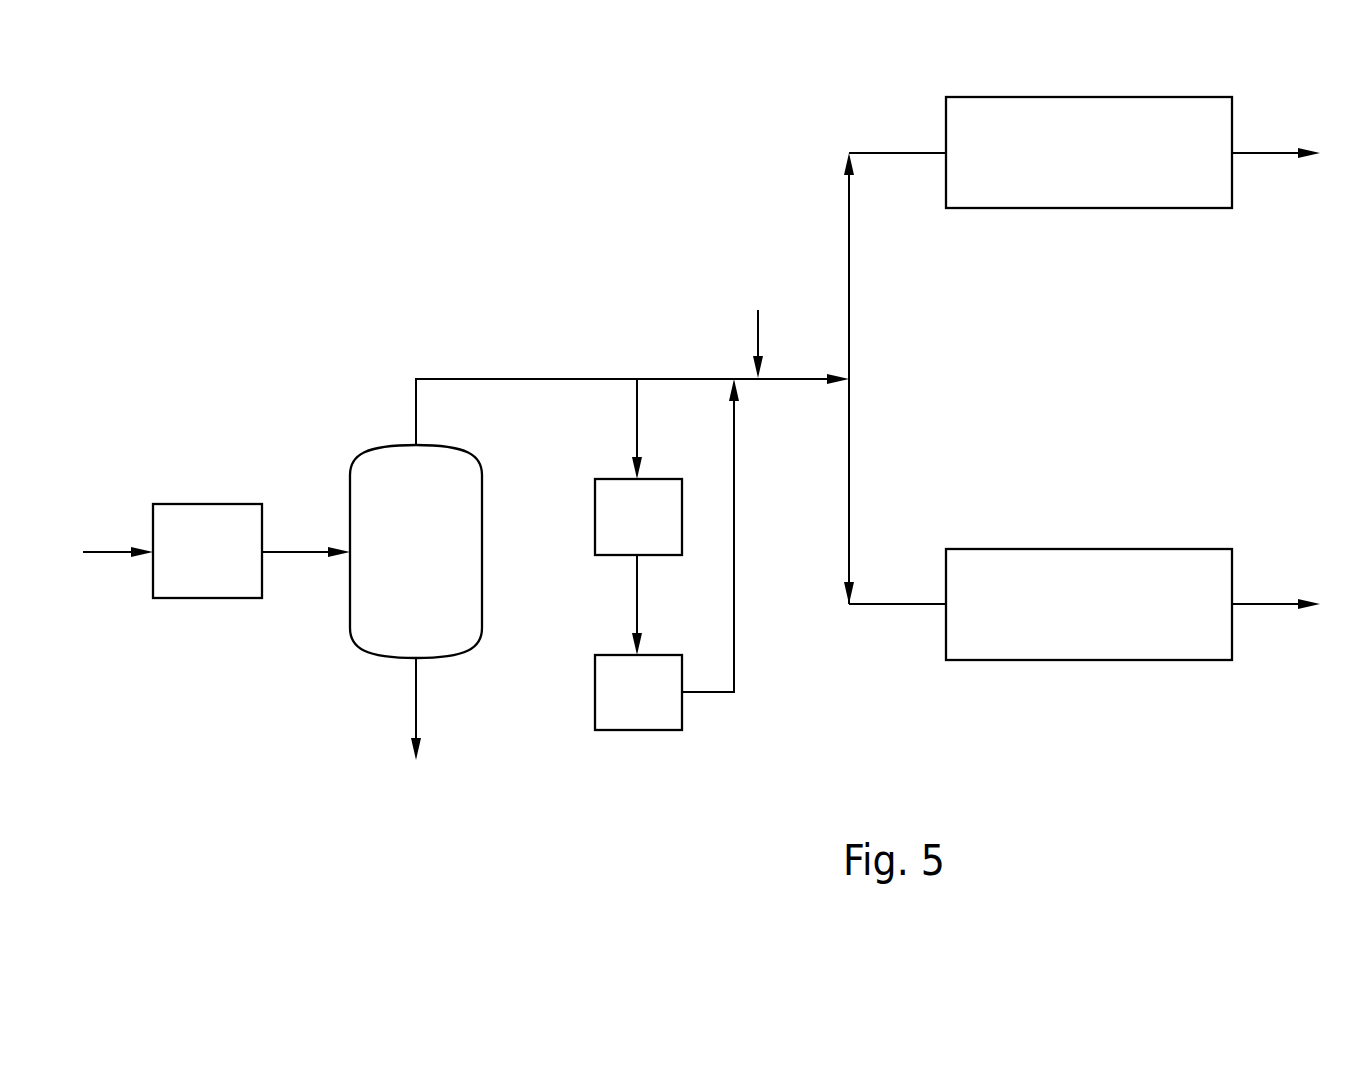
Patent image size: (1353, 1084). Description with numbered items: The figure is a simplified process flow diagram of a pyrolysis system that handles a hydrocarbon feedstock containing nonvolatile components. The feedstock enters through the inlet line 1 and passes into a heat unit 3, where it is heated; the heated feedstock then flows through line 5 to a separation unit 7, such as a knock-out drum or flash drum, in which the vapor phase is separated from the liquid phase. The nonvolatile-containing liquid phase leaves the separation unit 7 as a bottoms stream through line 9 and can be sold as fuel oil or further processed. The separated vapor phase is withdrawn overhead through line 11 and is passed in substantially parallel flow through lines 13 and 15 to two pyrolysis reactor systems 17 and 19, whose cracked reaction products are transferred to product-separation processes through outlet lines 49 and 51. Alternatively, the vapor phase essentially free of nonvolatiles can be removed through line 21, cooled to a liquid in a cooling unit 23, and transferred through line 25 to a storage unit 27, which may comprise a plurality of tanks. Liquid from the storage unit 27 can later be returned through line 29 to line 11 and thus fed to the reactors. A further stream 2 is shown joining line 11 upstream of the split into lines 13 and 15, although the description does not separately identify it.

The inlet line 1 is at (117, 548).
The heat unit 3 is at (220, 598).
The line 5 is at (312, 548).
The separation unit 7 is at (482, 558).
The line 9 is at (416, 697).
The line 11 is at (508, 379).
The additive stream 2 is at (758, 335).
The line 13 is at (849, 282).
The line 15 is at (849, 463).
The pyrolysis reactor system 17 is at (1073, 208).
The pyrolysis reactor system 19 is at (1073, 660).
The line 21 is at (637, 418).
The cooling unit 23 is at (595, 513).
The line 25 is at (637, 613).
The storage unit 27 is at (595, 697).
The line 29 is at (734, 457).
The outlet line 49 is at (1282, 155).
The outlet line 51 is at (1282, 606).